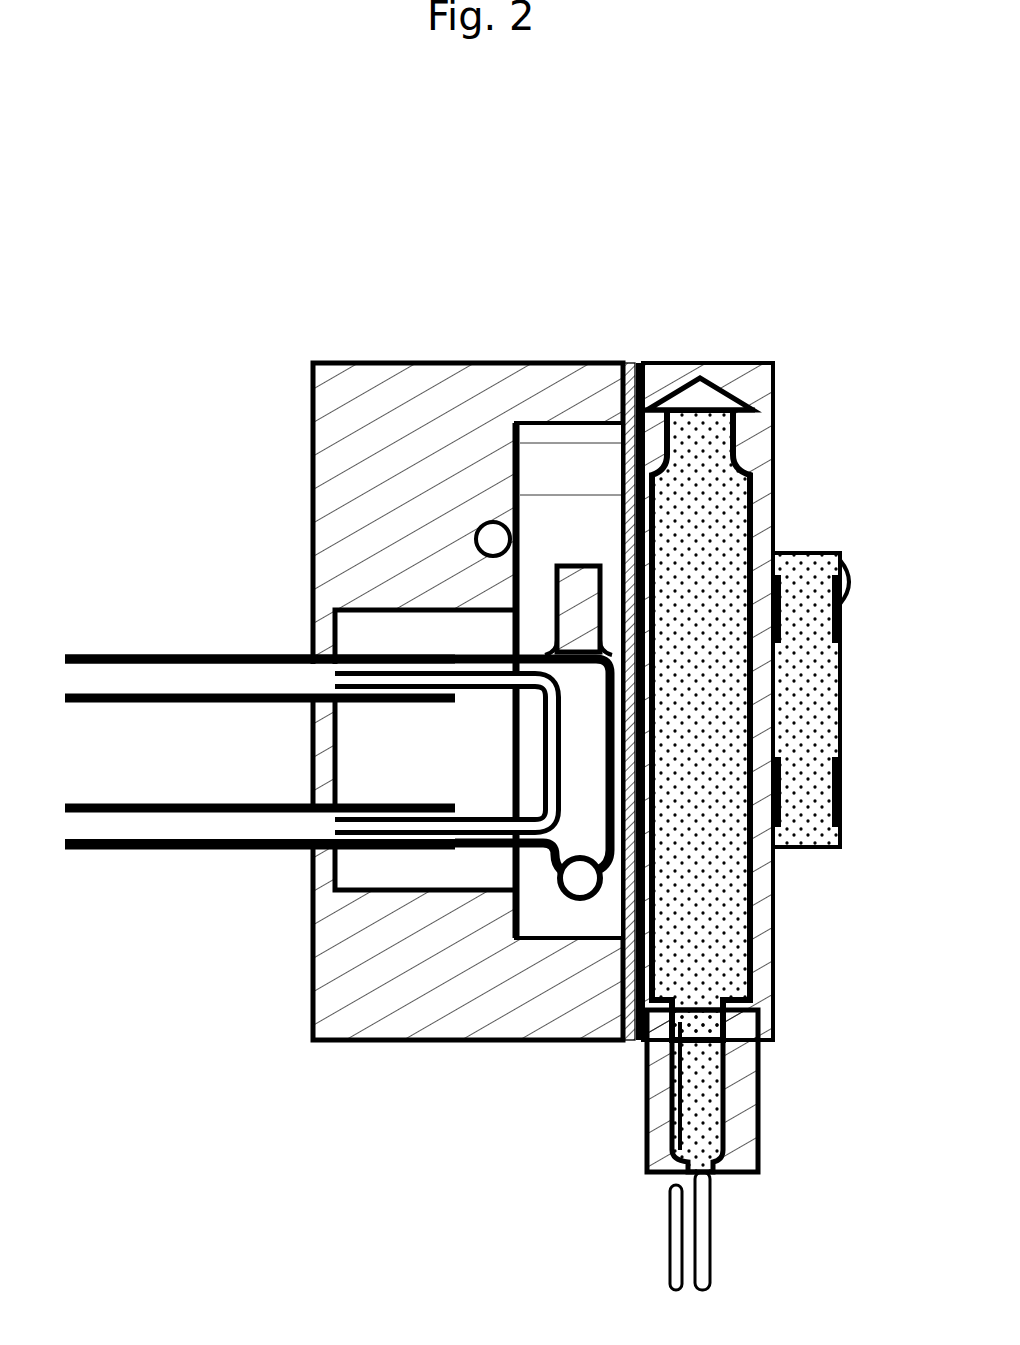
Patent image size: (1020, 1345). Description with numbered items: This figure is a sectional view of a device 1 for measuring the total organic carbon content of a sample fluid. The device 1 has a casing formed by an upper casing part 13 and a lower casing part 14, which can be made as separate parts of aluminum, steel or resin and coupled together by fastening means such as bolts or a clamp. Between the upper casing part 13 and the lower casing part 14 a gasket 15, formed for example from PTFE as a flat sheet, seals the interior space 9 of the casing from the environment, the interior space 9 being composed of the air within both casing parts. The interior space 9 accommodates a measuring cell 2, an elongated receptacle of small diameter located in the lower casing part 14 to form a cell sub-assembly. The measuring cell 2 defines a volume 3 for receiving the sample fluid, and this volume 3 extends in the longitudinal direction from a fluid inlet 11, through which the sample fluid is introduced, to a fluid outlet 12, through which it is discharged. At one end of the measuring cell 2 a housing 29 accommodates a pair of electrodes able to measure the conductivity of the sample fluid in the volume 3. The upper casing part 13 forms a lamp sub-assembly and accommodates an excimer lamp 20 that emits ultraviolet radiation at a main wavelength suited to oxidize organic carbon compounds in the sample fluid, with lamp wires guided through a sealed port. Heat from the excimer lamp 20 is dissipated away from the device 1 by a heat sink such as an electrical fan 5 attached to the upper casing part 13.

The device 1 is at (127, 249).
The measuring cell 2 is at (560, 853).
The volume 3 is at (547, 717).
The electrical fan 5 is at (802, 800).
The interior space 9 is at (620, 443).
The fluid inlet 11 is at (158, 850).
The fluid outlet 12 is at (165, 657).
The upper casing part 13 is at (773, 410).
The lower casing part 14 is at (313, 525).
The gasket 15 is at (622, 393).
The excimer lamp 20 is at (765, 1018).
The housing 29 is at (600, 587).